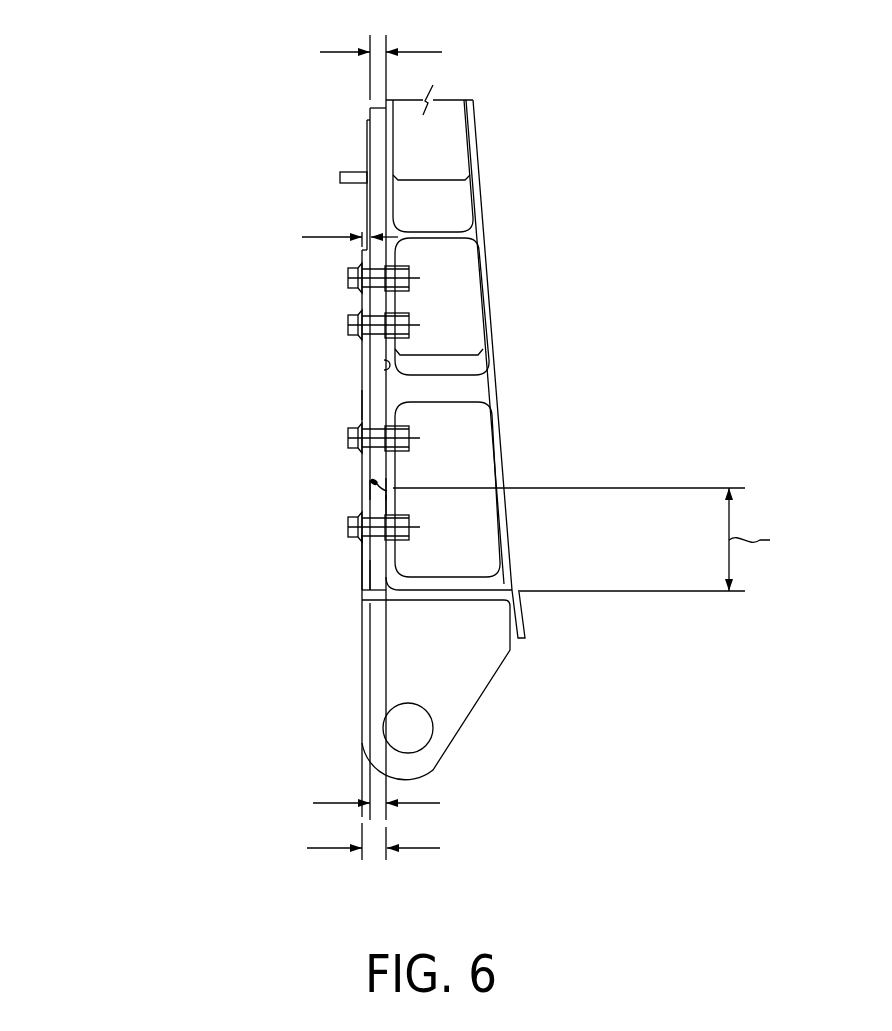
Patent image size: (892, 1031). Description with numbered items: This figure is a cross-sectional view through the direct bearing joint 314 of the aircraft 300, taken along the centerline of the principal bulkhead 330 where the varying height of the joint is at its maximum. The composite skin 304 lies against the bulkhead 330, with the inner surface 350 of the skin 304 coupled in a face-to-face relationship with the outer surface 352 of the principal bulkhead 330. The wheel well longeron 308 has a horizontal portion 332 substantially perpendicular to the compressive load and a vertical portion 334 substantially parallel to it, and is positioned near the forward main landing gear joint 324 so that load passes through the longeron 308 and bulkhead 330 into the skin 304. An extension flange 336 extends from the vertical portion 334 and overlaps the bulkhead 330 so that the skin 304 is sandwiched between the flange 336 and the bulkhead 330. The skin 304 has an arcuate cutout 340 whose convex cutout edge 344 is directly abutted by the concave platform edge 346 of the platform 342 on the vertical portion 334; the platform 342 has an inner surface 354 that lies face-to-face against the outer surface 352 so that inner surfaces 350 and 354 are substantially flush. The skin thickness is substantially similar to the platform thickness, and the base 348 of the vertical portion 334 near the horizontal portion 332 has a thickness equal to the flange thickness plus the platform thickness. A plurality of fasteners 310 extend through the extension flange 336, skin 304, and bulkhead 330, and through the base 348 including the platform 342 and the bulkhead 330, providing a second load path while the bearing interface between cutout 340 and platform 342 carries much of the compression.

The aircraft 300 is at (128, 141).
The composite skin 304 is at (377, 145).
The wheel well longeron 308 is at (360, 589).
The fasteners 310 is at (347, 278).
The direct bearing joint 314 is at (402, 463).
The forward main landing gear joint 324 is at (513, 722).
The principal bulkhead 330 is at (484, 155).
The horizontal portion 332 is at (483, 596).
The vertical portion 334 is at (362, 402).
The extension flange 336 is at (362, 383).
The arcuate cutout 340 is at (370, 481).
The platform 342 is at (368, 567).
The cutout edge 344 is at (387, 491).
The platform edge 346 is at (380, 489).
The base 348 is at (362, 547).
The inner surface 350 is at (377, 210).
The outer surface 352 is at (384, 365).
The inner surface 354 is at (388, 502).